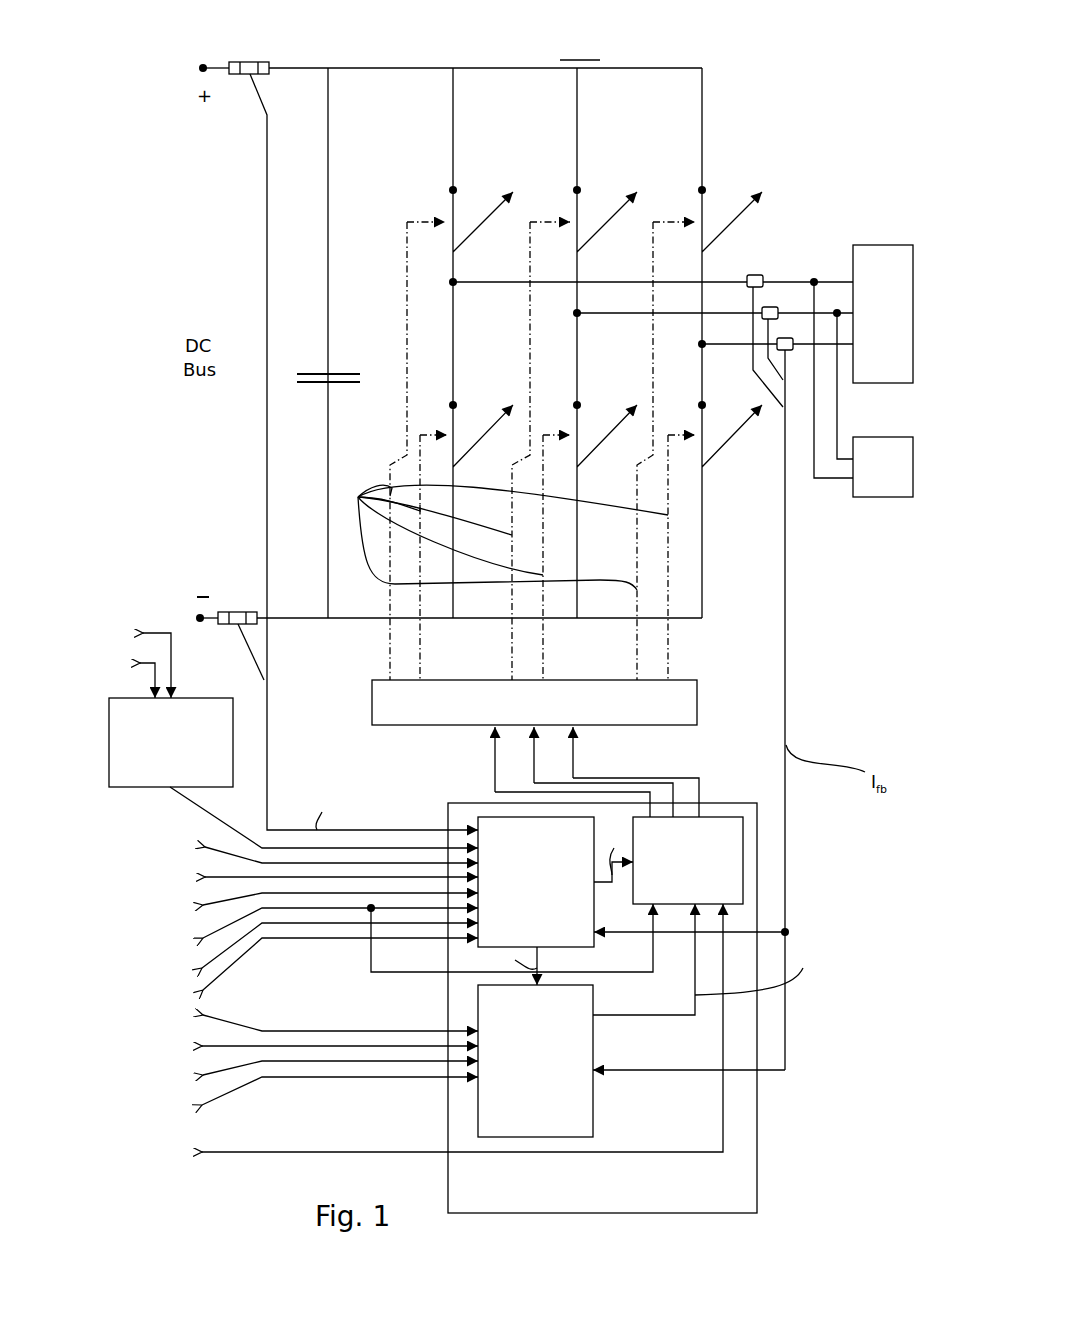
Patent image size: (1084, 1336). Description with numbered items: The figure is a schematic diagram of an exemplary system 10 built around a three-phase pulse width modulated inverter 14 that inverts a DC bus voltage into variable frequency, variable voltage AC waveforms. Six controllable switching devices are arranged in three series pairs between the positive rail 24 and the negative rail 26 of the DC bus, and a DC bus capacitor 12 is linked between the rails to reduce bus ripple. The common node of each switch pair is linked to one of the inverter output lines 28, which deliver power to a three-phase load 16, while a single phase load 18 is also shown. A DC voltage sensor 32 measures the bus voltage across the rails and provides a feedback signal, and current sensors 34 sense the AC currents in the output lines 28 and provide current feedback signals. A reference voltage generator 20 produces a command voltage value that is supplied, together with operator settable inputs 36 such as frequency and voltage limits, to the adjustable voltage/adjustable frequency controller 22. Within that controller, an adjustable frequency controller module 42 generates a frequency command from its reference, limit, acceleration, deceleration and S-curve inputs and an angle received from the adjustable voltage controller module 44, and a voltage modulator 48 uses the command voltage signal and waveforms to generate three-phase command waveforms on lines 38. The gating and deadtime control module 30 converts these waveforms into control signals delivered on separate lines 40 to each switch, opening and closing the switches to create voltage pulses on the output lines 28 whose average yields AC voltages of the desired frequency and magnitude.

The system 10 is at (561, 50).
The DC bus capacitor 12 is at (313, 374).
The inverter 14 is at (736, 128).
The three-phase load 16 is at (890, 245).
The single phase load 18 is at (880, 497).
The reference voltage generator 20 is at (230, 698).
The adjustable voltage/adjustable frequency (AVAF) controller 22 is at (757, 1093).
The positive rail 24 is at (362, 68).
The negative rail 26 is at (295, 620).
The inverter output lines 28 is at (809, 266).
The gating and deadtime control module 30 is at (372, 700).
The DC voltage sensor 32 is at (248, 62).
The current sensors 34 is at (787, 338).
The controller inputs 36 is at (338, 950).
The lines 38 is at (475, 772).
The lines 40 is at (513, 451).
The adjustable frequency controller module 42 is at (478, 1100).
The adjustable voltage controller module 44 is at (478, 818).
The voltage modulator 48 is at (733, 817).